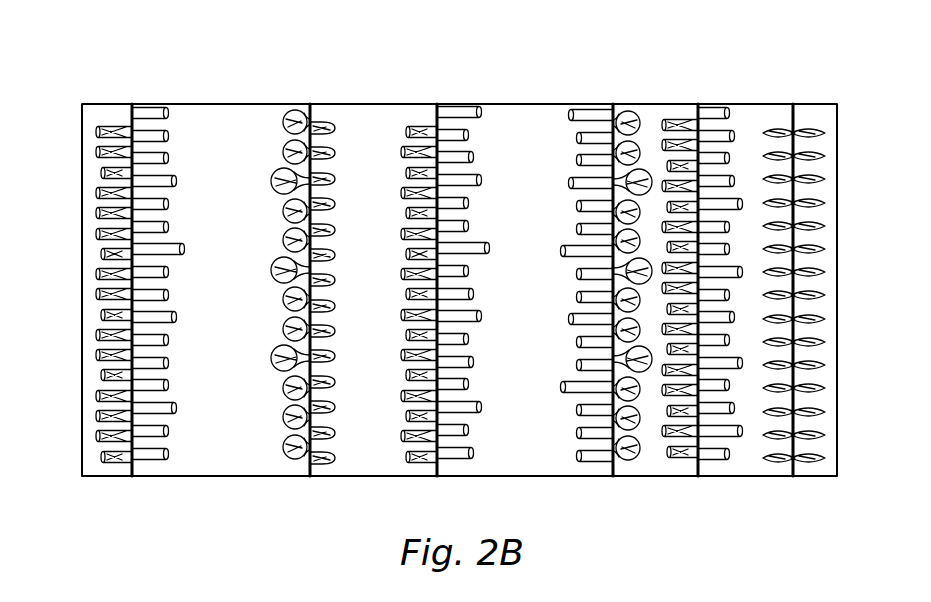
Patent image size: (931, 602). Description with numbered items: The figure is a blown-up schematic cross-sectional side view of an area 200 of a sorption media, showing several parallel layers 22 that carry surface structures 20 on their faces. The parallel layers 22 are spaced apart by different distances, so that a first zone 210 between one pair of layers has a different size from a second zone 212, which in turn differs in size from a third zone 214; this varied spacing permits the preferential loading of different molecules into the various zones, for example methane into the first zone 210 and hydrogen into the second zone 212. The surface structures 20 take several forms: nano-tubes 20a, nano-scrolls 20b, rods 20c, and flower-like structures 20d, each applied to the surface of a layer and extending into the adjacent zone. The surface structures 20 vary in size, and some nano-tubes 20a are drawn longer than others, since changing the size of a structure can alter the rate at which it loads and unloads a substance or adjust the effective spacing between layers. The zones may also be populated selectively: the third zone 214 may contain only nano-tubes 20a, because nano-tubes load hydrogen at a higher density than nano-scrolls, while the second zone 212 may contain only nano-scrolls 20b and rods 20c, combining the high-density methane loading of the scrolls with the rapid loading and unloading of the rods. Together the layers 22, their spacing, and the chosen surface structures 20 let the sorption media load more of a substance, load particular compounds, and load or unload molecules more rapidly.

The area of the sorption media 200 is at (82, 116).
The surface structures 20 is at (283, 120).
The nano-tubes 20a is at (480, 113).
The nano-scrolls 20b is at (338, 128).
The rods 20c is at (425, 460).
The flower-like structures 20d is at (627, 456).
The parallel layers 22 is at (793, 104).
The first zone 210 is at (230, 466).
The second zone 212 is at (360, 466).
The third zone 214 is at (537, 458).